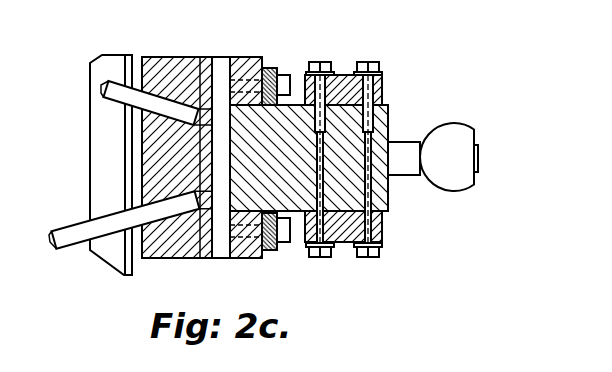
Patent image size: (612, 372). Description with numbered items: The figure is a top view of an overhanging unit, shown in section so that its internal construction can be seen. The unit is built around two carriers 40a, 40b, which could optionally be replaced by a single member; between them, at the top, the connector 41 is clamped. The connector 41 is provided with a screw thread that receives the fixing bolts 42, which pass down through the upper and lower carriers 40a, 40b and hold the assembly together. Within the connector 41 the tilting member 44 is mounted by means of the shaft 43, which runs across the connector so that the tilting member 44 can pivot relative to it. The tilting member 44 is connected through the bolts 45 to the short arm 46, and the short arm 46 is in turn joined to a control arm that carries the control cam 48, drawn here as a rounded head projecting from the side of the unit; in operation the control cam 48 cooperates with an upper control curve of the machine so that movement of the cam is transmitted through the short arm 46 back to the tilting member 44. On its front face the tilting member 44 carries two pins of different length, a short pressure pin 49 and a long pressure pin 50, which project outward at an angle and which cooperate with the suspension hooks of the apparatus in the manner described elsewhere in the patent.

The carrier 40a is at (383, 92).
The carrier 40b is at (383, 232).
The connector 41 is at (390, 125).
The fixing bolts 42 is at (324, 60).
The shaft 43 is at (220, 240).
The tilting member 44 is at (182, 72).
The bolts 45 is at (287, 83).
The short arm 46 is at (270, 252).
The control cam 48 is at (457, 184).
The short pressure pin 49 is at (110, 95).
The long pressure pin 50 is at (72, 236).